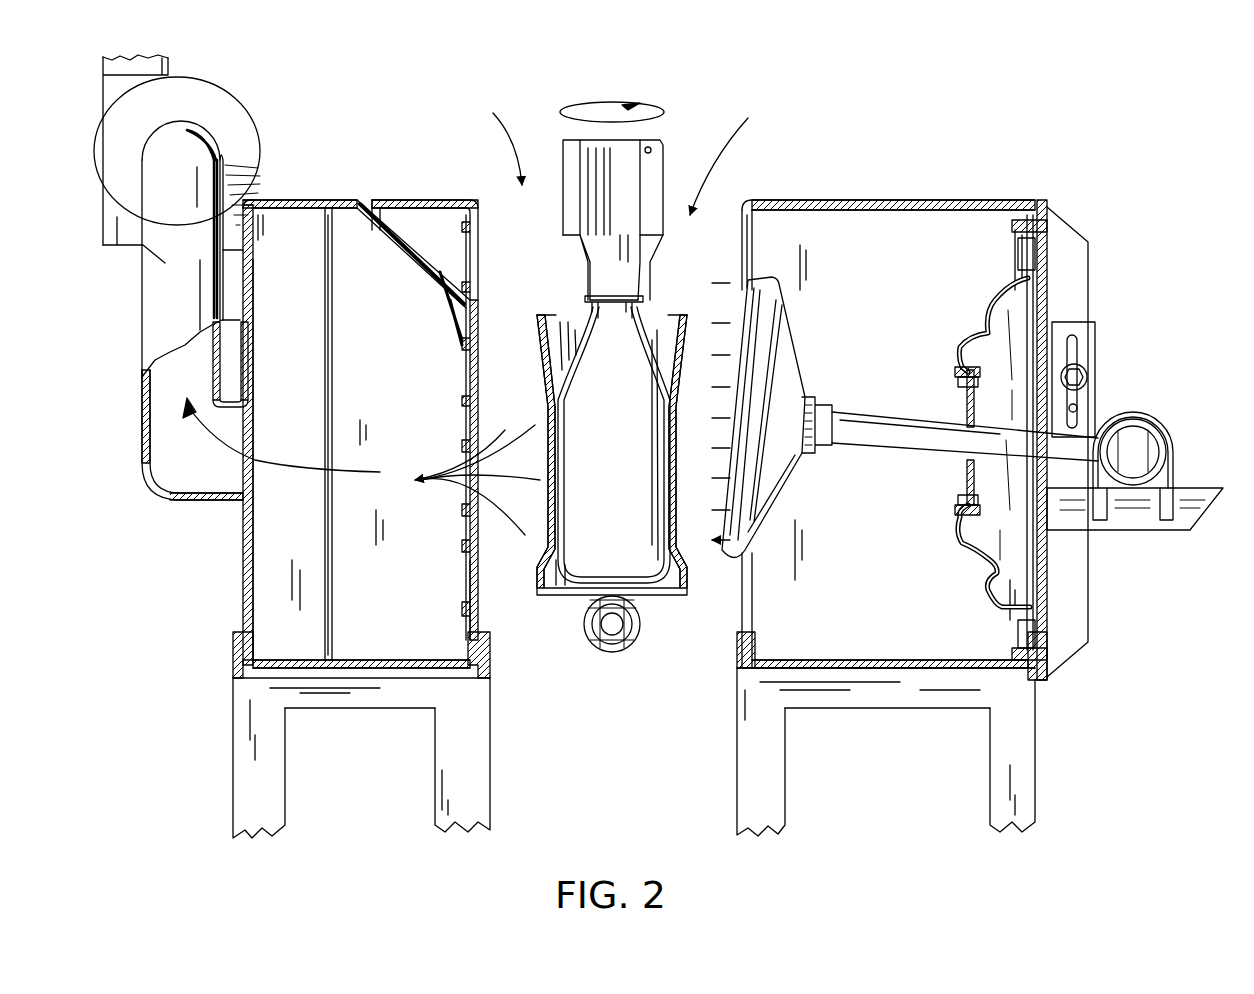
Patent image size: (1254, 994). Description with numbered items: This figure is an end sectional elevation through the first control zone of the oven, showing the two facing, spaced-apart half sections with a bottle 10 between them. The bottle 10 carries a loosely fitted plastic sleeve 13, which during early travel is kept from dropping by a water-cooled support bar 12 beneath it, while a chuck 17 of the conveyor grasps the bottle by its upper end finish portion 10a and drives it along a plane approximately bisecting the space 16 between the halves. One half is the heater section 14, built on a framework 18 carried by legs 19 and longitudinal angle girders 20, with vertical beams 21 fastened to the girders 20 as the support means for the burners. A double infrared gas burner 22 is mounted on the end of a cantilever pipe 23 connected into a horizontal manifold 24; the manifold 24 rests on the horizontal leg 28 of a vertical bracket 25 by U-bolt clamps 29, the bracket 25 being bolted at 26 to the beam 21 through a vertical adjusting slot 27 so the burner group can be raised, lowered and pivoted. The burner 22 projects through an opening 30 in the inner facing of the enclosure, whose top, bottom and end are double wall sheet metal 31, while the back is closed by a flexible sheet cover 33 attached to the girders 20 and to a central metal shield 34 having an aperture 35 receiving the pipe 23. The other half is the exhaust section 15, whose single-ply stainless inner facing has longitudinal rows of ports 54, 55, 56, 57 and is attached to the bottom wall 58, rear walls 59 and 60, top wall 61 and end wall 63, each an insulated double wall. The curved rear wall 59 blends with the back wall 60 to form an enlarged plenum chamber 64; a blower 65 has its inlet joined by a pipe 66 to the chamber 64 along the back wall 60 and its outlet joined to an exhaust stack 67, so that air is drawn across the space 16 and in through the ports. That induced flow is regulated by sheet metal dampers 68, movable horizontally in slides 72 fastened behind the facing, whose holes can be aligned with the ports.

The bottle 10 is at (625, 492).
The upper end finish portion 10a is at (590, 290).
The support bar 12 is at (640, 608).
The plastic sleeve 13 is at (546, 398).
The heater section 14 is at (828, 196).
The exhaust section 15 is at (365, 195).
The space 16 is at (700, 290).
The chuck 17 is at (578, 240).
The framework 18 is at (368, 705).
The leg 19 is at (268, 783).
The longitudinal angle girder 20 is at (233, 655).
The vertical beam 21 is at (1072, 272).
The double infrared gas burner 22 is at (752, 378).
The cantilever pipe 23 is at (868, 418).
The horizontal manifold 24 is at (1165, 438).
The vertical bracket 25 is at (1100, 328).
The bolt 26 is at (1090, 375).
The vertical adjusting slot 27 is at (1085, 407).
The horizontal leg 28 is at (1160, 520).
The U-bolt clamp 29 is at (1175, 470).
The opening 30 is at (742, 242).
The double wall sheet metal 31 is at (872, 200).
The flexible sheet cover 33 is at (985, 318).
The central metal shield 34 is at (966, 475).
The aperture 35 is at (965, 420).
The port 54 is at (478, 252).
The port 55 is at (478, 372).
The port 56 is at (470, 465).
The port 57 is at (480, 580).
The bottom wall 58 is at (292, 208).
The rear wall 59 is at (334, 385).
The rear wall 60 is at (250, 368).
The top wall 61 is at (315, 200).
The end wall 63 is at (398, 448).
The plenum chamber 64 is at (258, 548).
The blower 65 is at (250, 127).
The pipe 66 is at (152, 350).
The exhaust stack 67 is at (150, 63).
The damper 68 is at (466, 246).
The slide 72 is at (466, 224).